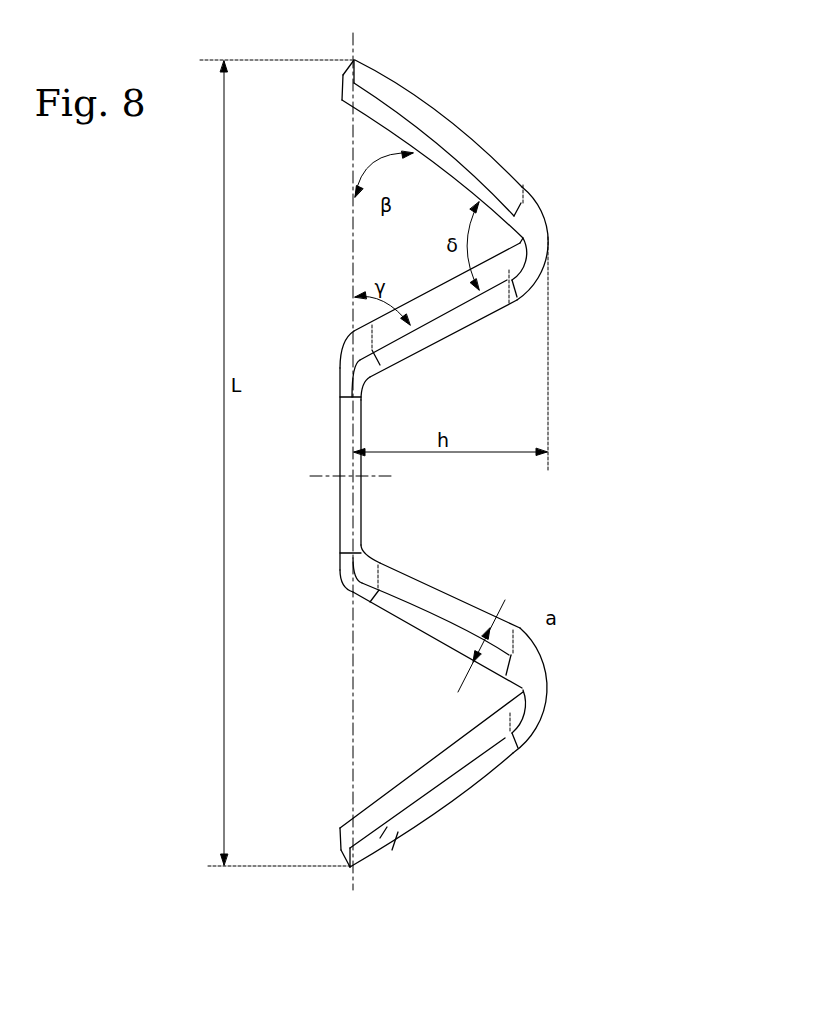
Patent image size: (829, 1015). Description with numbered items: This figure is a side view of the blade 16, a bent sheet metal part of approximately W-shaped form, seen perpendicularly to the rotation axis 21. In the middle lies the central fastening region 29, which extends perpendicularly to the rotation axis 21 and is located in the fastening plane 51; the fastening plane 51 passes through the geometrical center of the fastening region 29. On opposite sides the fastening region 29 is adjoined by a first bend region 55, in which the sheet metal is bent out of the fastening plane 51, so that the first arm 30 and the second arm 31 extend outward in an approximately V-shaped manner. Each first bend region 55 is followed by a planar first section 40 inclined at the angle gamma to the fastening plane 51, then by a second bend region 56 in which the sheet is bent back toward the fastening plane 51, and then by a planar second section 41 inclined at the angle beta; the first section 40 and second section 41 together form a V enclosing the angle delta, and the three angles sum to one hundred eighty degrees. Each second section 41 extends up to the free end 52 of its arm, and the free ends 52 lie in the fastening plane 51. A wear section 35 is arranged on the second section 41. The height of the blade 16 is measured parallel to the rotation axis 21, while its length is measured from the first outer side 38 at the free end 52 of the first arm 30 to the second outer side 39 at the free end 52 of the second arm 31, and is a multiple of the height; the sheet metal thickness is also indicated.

The blade 16 is at (648, 58).
The rotation axis 21 is at (322, 473).
The fastening region 29 is at (340, 508).
The first arm 30 is at (577, 743).
The second arm 31 is at (597, 180).
The wear section 35 is at (405, 85).
The first outer side 38 is at (337, 842).
The second outer side 39 is at (342, 78).
The first section 40 is at (440, 330).
The second section 41 is at (465, 150).
The fastening plane 51 is at (350, 46).
The free end 52 is at (358, 65).
The first bend region 55 is at (342, 357).
The second bend region 56 is at (537, 200).